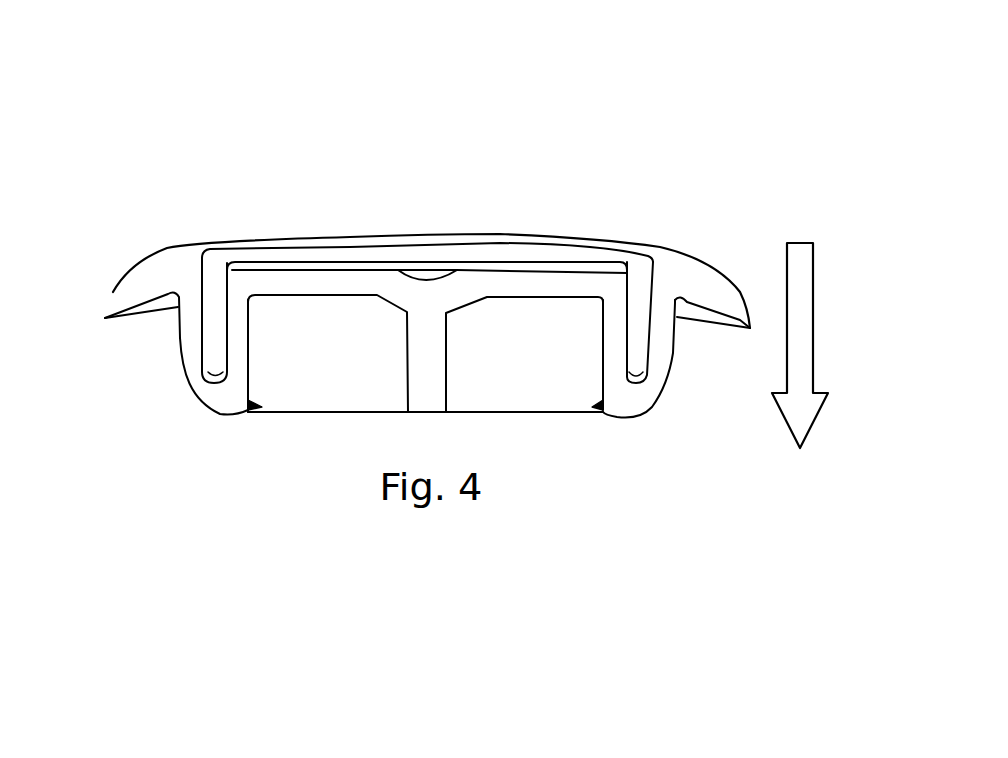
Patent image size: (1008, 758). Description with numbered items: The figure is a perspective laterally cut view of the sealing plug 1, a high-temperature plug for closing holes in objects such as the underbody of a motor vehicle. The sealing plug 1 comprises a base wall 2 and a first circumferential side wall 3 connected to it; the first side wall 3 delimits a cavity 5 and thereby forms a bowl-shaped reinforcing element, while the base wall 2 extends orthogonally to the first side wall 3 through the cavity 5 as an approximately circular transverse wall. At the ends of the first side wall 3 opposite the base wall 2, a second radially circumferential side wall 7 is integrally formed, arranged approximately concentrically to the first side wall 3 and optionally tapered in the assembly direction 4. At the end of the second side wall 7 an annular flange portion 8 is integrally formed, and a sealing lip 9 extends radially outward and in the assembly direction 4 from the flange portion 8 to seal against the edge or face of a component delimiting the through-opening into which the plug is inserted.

The sealing plug 1 is at (785, 87).
The base wall 2 is at (510, 287).
The first circumferential side wall 3 is at (613, 360).
The assembly direction 4 is at (810, 423).
The cavity 5 is at (323, 370).
The second radially circumferential side wall 7 is at (207, 340).
The annular flange portion 8 is at (703, 280).
The sealing lip 9 is at (117, 302).